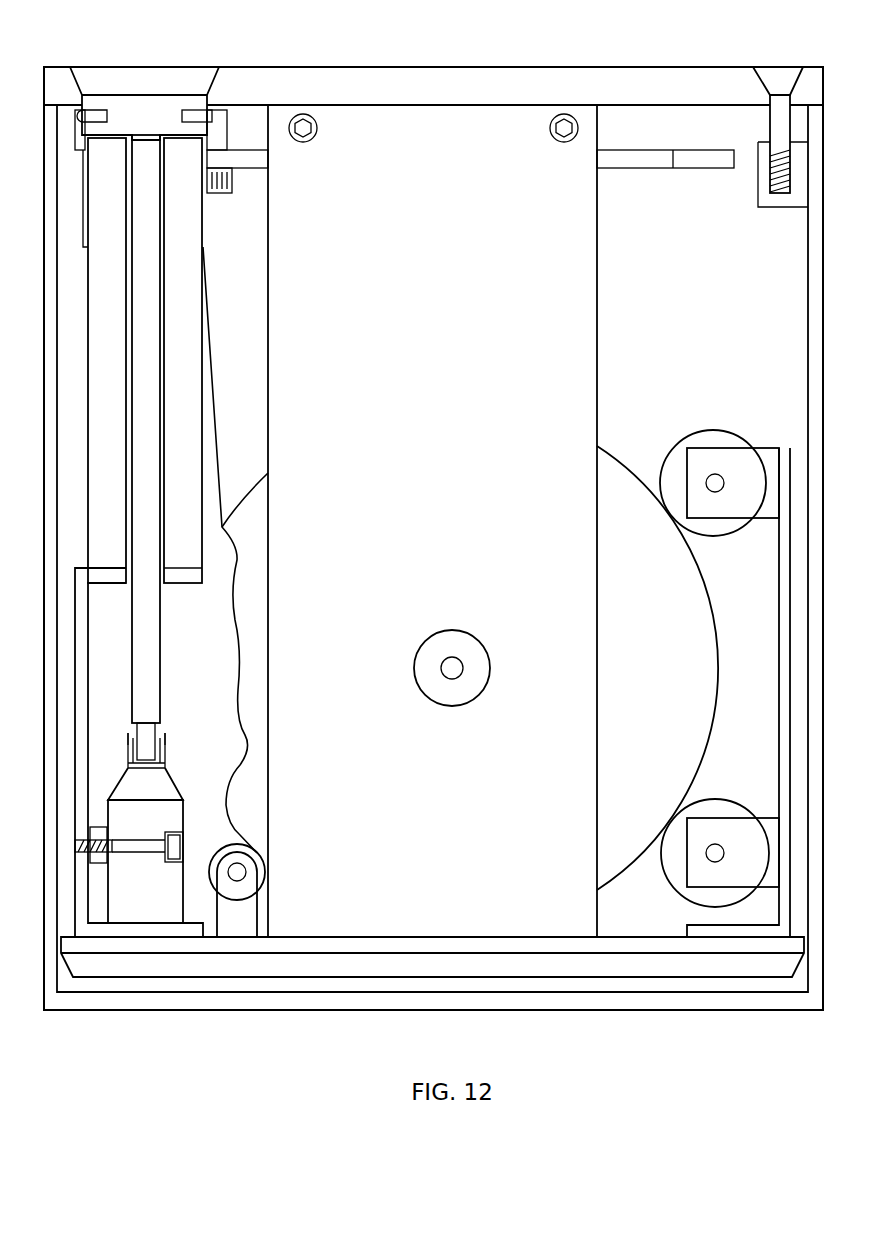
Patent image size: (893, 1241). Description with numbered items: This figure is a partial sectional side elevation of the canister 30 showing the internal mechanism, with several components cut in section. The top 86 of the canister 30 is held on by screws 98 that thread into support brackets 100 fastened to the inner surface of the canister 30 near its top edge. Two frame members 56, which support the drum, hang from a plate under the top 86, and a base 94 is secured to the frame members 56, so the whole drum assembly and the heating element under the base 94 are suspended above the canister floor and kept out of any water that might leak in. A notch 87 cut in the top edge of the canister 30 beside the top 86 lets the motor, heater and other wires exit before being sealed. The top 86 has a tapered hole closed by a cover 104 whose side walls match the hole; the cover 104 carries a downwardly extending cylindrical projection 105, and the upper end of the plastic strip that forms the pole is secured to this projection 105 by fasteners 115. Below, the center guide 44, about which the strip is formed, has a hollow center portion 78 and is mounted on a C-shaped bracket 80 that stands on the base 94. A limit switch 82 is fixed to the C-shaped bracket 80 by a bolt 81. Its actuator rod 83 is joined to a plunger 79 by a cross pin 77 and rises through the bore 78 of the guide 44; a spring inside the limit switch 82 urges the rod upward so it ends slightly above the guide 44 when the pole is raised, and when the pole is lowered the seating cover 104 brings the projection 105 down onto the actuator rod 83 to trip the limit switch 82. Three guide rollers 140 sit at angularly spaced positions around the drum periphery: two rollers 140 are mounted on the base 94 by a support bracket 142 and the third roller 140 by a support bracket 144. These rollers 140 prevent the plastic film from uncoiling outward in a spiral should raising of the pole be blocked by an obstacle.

The canister 30 is at (808, 318).
The center guide 44 is at (105, 295).
The frame members 56 is at (511, 521).
The cross pin 77 is at (130, 735).
The hollow center portion 78 is at (158, 427).
The plunger 79 is at (165, 760).
The C-shaped bracket 80 is at (85, 685).
The bolt 81 is at (185, 845).
The limit switch 82 is at (168, 790).
The actuator rod 83 is at (150, 650).
The top 86 is at (652, 76).
The notch 87 is at (95, 835).
The base 94 is at (487, 937).
The screws 98 is at (785, 78).
The support brackets 100 is at (763, 187).
The cover 104 is at (193, 78).
The cylindrical projection 105 is at (120, 108).
The fasteners 115 is at (212, 116).
The guide rollers 140 is at (708, 432).
The support bracket 142 is at (781, 680).
The support bracket 144 is at (240, 908).